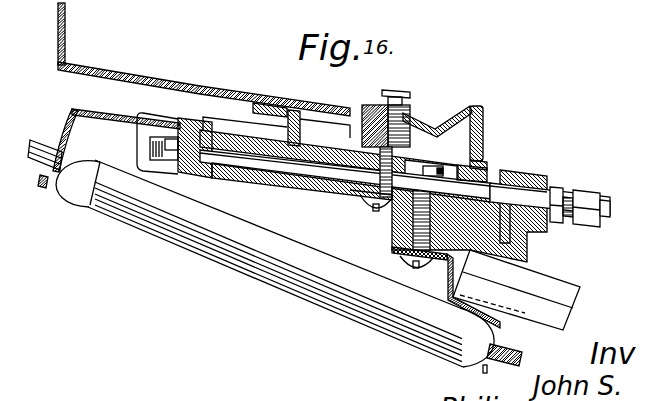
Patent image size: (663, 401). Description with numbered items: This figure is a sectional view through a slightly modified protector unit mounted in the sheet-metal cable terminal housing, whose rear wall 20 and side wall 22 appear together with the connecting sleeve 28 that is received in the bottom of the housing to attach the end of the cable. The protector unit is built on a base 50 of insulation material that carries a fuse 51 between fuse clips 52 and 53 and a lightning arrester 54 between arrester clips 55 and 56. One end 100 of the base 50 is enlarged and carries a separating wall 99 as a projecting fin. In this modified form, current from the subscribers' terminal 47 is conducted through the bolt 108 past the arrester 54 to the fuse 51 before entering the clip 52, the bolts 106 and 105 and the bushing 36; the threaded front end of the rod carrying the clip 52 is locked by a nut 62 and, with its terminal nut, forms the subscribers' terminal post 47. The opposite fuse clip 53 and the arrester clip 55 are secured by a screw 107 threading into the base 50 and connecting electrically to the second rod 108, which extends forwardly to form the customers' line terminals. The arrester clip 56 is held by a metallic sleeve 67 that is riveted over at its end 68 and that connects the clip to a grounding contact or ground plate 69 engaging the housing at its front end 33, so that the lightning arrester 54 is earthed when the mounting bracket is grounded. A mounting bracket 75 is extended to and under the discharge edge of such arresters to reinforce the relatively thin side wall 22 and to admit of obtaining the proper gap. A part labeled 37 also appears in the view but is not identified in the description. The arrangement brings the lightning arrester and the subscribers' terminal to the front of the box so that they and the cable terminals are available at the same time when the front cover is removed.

The rear wall 20 is at (67, 25).
The side wall 22 is at (135, 72).
The connecting sleeve 28 is at (361, 115).
The front end of housing 33 is at (484, 122).
The bushing 36 is at (397, 90).
The bent bracket strip 37 is at (413, 123).
The subscribers' terminal post 47 is at (603, 205).
The base 50 is at (216, 243).
The fuse 51 is at (292, 274).
The fuse clip 52 is at (68, 113).
The fuse clip 53 is at (470, 359).
The lightning arrester 54 is at (558, 312).
The lightning arrester clip 55 is at (421, 345).
The lightning arrester clip 56 is at (540, 268).
The nut 62 is at (567, 195).
The metallic sleeve 67 is at (494, 173).
The riveted end 68 is at (516, 178).
The grounding contact 69 is at (484, 160).
The mounting bracket 75 is at (279, 104).
The separating wall 99 is at (167, 117).
The enlarged end 100 is at (204, 117).
The bolt 105 is at (351, 199).
The bolt 106 is at (300, 173).
The screw 107 is at (390, 280).
The bolt or second rod 108 is at (541, 201).